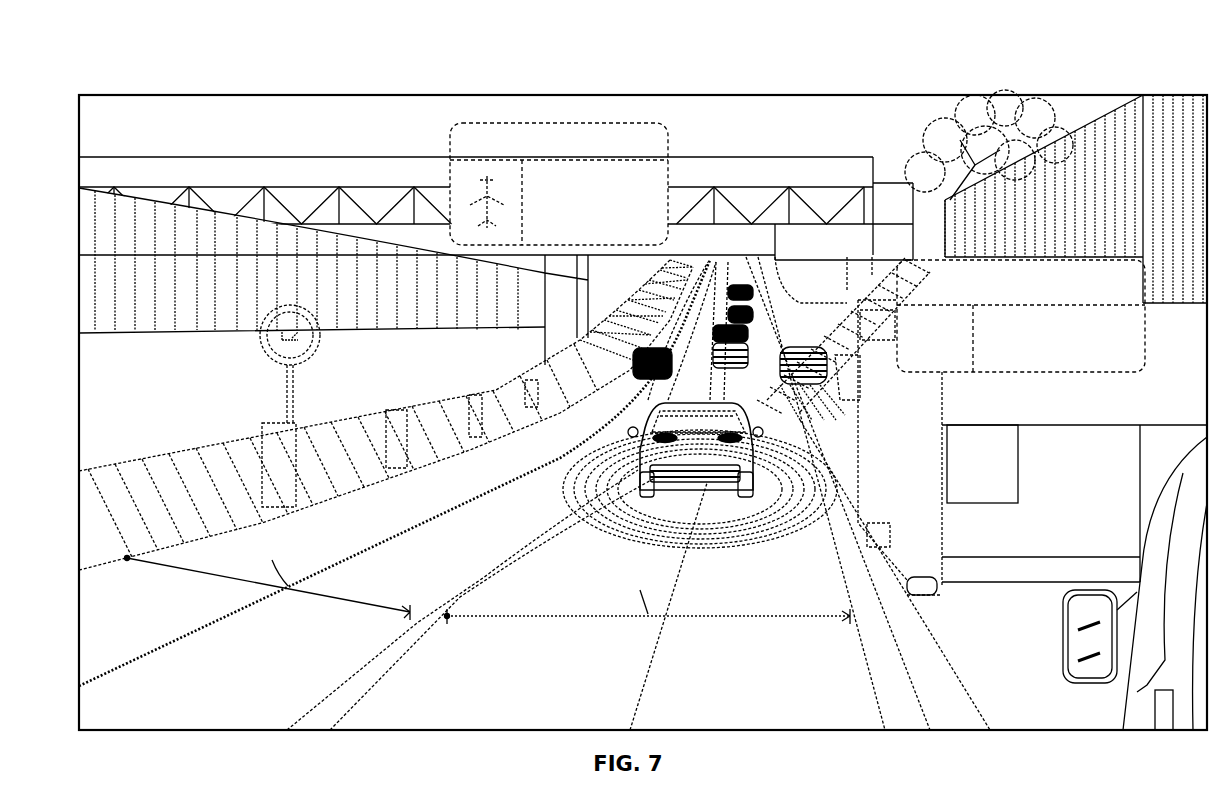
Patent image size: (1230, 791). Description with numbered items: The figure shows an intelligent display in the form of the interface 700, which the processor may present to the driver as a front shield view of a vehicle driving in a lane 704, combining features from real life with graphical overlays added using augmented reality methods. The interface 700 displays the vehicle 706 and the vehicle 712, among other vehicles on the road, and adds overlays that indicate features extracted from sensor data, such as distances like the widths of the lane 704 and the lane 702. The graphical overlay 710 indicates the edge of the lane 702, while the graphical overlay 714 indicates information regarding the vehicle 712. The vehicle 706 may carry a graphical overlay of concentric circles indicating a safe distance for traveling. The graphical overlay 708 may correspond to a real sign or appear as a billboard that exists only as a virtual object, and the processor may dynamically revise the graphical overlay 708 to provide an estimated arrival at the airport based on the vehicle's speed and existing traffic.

The interface 700 is at (1170, 66).
The lane 702 is at (182, 704).
The lane 704 is at (734, 711).
The vehicle 706 is at (627, 437).
The graphical overlay 708 is at (560, 123).
The graphical overlay 710 is at (174, 458).
The vehicle 712 is at (882, 508).
The graphical overlay 714 is at (1103, 294).